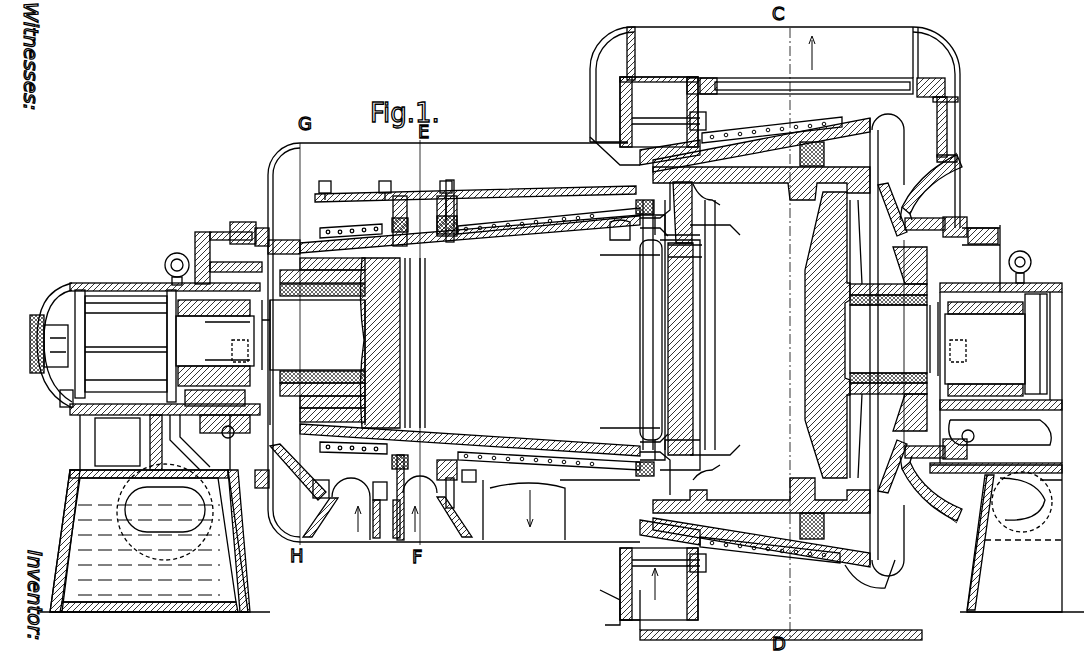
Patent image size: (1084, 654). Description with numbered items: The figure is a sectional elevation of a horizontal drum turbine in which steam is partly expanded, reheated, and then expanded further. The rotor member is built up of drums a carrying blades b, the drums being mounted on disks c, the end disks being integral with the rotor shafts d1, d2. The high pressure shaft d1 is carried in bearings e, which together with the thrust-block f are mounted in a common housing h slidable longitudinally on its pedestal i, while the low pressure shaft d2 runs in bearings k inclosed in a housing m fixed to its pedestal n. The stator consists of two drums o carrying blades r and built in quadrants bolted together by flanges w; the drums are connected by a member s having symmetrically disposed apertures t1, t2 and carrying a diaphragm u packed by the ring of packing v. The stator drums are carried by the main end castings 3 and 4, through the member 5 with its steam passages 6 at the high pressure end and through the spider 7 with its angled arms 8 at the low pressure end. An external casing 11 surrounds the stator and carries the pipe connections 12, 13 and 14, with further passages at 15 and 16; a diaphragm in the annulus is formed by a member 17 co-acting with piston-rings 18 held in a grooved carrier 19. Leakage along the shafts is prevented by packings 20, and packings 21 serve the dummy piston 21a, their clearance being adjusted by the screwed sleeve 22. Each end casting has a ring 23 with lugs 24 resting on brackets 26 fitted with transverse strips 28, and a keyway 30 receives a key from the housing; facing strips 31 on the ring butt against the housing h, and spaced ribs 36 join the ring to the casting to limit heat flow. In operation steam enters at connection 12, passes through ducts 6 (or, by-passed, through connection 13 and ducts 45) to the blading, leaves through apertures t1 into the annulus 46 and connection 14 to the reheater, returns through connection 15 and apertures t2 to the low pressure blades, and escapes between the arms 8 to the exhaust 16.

The housing h is at (80, 290).
The thrust-block f is at (128, 318).
The bearings e is at (190, 305).
The lugs 24 is at (240, 345).
The brackets 26 is at (232, 352).
The facing strips 31 is at (225, 235).
The ring 23 is at (238, 222).
The spaced ribs 36 is at (260, 228).
The keyway 30 is at (210, 462).
The pedestal i is at (70, 493).
The main end casting 3 is at (285, 228).
The external casing 11 is at (482, 192).
The annulus 46 is at (540, 190).
The member 5 is at (310, 245).
The steam passages 6 is at (300, 440).
The ducts 45 is at (420, 240).
The flange w is at (505, 236).
The stator drums o is at (515, 222).
The member 17 is at (410, 205).
The piston-rings 18 is at (414, 228).
The grooved carrier 19 is at (455, 240).
The disks c is at (395, 336).
The packings 20 is at (340, 305).
The screwed sleeve 22 is at (292, 296).
The rotor shaft d1 is at (317, 362).
The packings 21 is at (365, 280).
The dummy piston 21a is at (365, 412).
The strips 28 is at (265, 355).
The pipe connection 12 is at (340, 530).
The pipe connection 13 is at (450, 520).
The pipe connection 14 is at (545, 520).
The member s is at (612, 135).
The apertures t2 is at (648, 145).
The exhaust 16 is at (743, 82).
The connection 15 is at (624, 613).
The rotor drums a is at (568, 260).
The blades b is at (610, 245).
The blades r is at (600, 226).
The diaphragm u is at (702, 215).
The ring of packing v is at (652, 262).
The apertures t1 is at (618, 460).
The chamber t is at (650, 355).
The rotor shaft d2 is at (897, 338).
The arms 8 is at (895, 145).
The main end casting 4 is at (945, 178).
The spider 7 is at (886, 588).
The pedestal n is at (980, 540).
The bearings k is at (1022, 272).
The housing m is at (1030, 290).